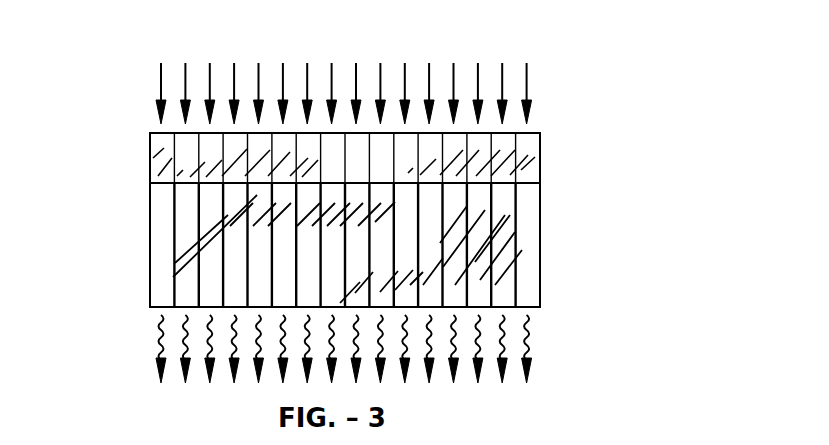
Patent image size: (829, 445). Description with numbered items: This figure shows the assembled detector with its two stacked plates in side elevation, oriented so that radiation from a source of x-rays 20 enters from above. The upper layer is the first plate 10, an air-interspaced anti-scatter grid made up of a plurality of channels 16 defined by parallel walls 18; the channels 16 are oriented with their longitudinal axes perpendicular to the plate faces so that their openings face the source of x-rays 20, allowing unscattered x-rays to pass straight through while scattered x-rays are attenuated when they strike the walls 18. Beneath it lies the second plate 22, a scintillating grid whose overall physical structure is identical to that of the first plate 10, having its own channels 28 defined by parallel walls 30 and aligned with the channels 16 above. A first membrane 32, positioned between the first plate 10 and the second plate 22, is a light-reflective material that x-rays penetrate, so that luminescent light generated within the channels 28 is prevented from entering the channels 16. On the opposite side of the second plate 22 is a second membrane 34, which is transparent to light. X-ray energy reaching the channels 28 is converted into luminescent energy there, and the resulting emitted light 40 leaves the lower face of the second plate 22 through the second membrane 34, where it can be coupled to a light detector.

The first plate 10 is at (560, 157).
The channels 16 is at (155, 156).
The parallel walls 18 is at (527, 149).
The source of x-rays 20 is at (528, 76).
The second plate 22 is at (553, 238).
The channels 28 is at (184, 295).
The parallel walls 30 is at (173, 224).
The first membrane 32 is at (530, 181).
The second membrane 34 is at (533, 307).
The emitted light 40 is at (529, 333).